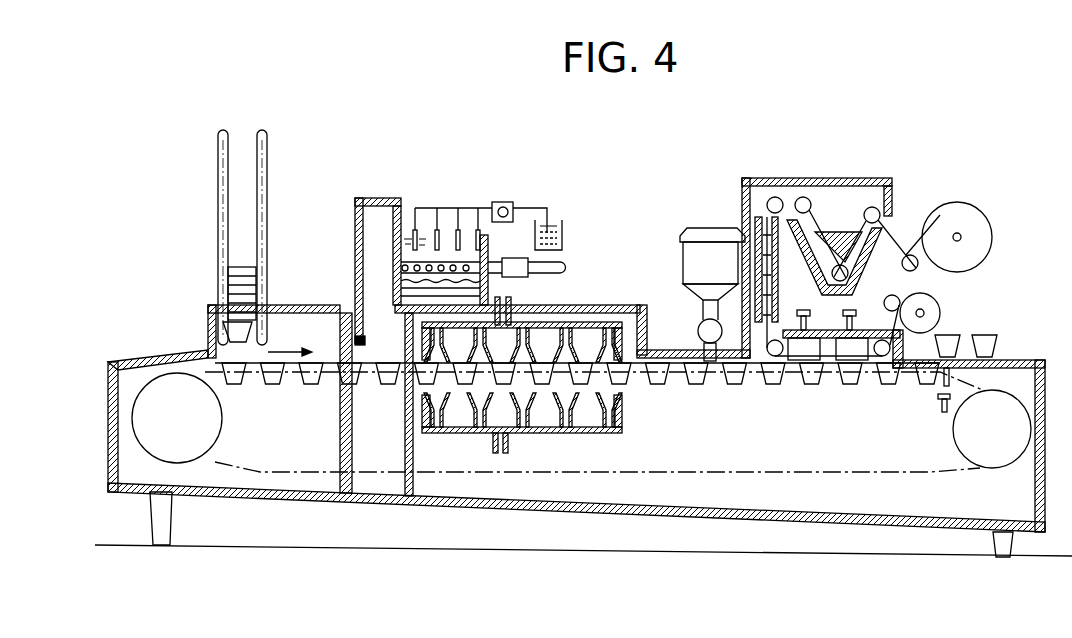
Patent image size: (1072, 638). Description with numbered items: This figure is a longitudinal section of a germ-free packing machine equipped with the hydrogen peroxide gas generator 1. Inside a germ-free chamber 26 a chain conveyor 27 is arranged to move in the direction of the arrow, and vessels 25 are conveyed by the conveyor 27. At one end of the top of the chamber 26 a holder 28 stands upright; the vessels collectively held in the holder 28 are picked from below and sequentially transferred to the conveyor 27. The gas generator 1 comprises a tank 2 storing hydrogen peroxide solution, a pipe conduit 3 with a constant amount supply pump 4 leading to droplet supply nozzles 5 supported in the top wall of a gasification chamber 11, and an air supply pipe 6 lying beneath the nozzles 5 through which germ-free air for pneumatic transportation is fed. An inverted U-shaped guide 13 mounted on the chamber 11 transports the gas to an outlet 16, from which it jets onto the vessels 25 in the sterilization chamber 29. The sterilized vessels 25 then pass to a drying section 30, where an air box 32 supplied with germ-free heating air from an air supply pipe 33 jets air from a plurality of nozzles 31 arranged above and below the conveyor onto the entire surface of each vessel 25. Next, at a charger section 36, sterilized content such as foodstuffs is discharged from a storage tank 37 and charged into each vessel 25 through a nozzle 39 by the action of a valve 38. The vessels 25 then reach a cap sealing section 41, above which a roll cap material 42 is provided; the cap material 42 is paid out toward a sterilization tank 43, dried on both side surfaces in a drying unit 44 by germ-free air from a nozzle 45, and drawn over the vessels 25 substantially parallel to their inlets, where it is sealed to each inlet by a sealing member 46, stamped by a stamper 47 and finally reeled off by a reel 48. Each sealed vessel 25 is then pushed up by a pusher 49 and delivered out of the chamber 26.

The hydrogen peroxide gas generator 1 is at (432, 188).
The tank 2 is at (563, 235).
The pipe conduit 3 is at (533, 220).
The constant amount supply pump 4 is at (500, 200).
The droplet supply nozzle 5 is at (488, 250).
The air supply pipe 6 is at (560, 268).
The gasification chamber 11 is at (405, 274).
The inverted U-shaped guide 13 is at (378, 205).
The outlet 16 is at (366, 345).
The vessels 25 is at (243, 282).
The germ-free chamber 26 is at (650, 495).
The chain conveyor 27 is at (465, 480).
The holder 28 is at (268, 195).
The sterilization chamber 29 is at (365, 493).
The drying section 30 is at (612, 312).
The nozzles 31 is at (625, 367).
The air box 32 is at (553, 428).
The air supply pipe 33 is at (512, 305).
The charger section 36 is at (680, 216).
The storage tank 37 is at (697, 262).
The valve 38 is at (705, 330).
The nozzle 39 is at (713, 362).
The cap sealing section 41 is at (784, 396).
The roll cap material 42 is at (980, 237).
The sterilization tank 43 is at (850, 275).
The drying unit 44 is at (739, 198).
The nozzle 45 is at (770, 232).
The sealing member 46 is at (808, 355).
The stamper 47 is at (848, 355).
The reel 48 is at (925, 313).
The pusher 49 is at (937, 405).